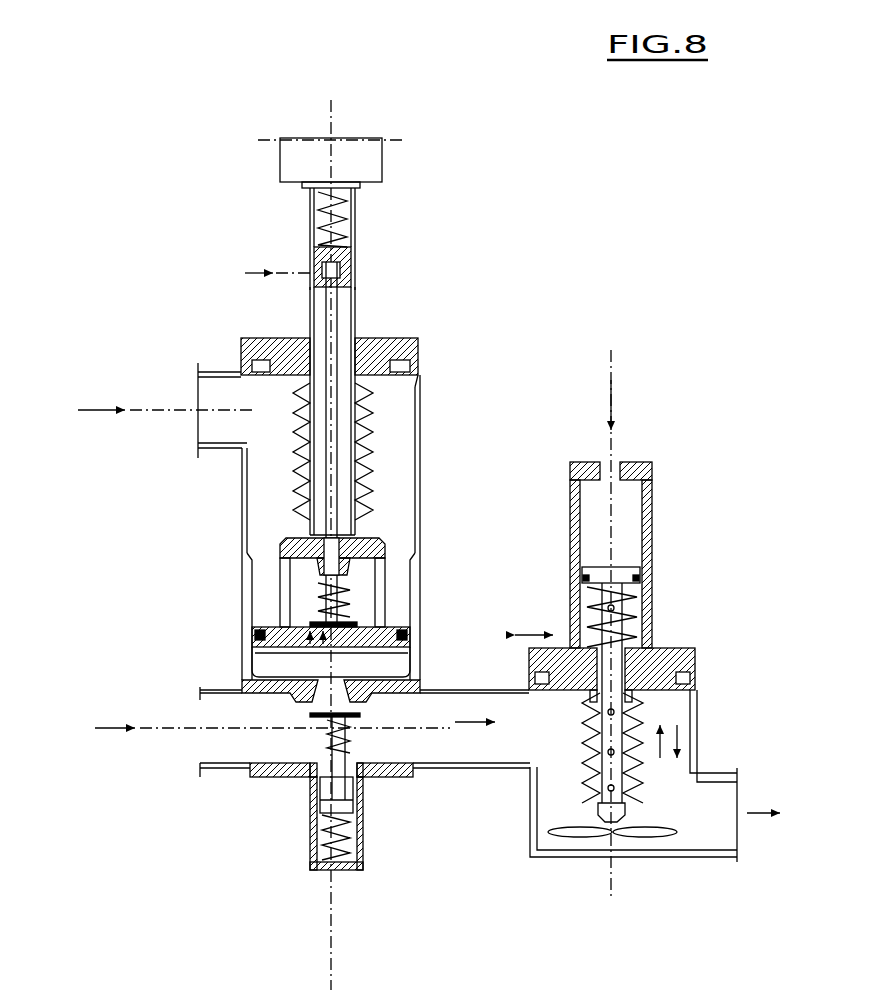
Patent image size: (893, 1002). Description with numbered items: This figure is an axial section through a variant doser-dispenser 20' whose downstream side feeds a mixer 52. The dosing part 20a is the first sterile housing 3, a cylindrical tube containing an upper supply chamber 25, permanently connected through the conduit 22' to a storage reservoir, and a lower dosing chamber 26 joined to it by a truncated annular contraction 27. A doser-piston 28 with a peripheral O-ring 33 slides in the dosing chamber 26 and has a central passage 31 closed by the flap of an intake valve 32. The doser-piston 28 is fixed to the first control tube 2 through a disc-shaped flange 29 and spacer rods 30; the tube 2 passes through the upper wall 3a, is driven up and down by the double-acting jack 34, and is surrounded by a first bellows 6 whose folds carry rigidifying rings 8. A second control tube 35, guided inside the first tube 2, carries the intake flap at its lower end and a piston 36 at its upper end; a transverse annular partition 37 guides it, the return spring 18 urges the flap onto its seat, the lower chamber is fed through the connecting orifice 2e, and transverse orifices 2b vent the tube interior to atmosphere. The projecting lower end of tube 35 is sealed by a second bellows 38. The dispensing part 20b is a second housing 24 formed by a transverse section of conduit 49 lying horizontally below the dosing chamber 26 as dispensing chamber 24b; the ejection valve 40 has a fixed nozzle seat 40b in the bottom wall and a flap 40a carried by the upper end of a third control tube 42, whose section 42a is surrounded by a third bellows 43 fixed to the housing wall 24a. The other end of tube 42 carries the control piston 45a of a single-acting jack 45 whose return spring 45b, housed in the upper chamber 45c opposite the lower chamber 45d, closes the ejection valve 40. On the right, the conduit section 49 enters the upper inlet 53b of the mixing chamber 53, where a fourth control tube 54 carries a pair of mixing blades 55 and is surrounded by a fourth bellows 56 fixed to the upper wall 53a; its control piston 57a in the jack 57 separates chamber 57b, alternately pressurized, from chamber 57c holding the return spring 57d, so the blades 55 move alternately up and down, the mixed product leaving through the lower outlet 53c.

The double-acting jack 34 is at (365, 160).
The return spring 18 is at (345, 207).
The piston 36 is at (353, 246).
The transverse annular partition 37 is at (355, 275).
The connecting orifice 2e is at (310, 266).
The first control tube 2 is at (356, 306).
The second control tube 35 is at (337, 455).
The upper wall 3a is at (383, 338).
The doser-dispenser 20' is at (483, 364).
The dosing part 20a is at (439, 374).
The conduit 22' is at (197, 386).
The first sterile housing 3 is at (421, 478).
The supply chamber 25 is at (388, 428).
The first bellows 6 is at (296, 421).
The rigidifying ring 8 is at (294, 464).
The flange 29 is at (298, 547).
The spacer rods 30 is at (284, 600).
The second bellows 38 is at (323, 597).
The O-ring 33 is at (257, 634).
The central passage 31 is at (346, 642).
The intake valve 32 is at (312, 636).
The dosing chamber 26 is at (262, 664).
The truncated annular contraction 27 is at (418, 557).
The doser-piston 28 is at (388, 630).
The second housing 24 is at (448, 690).
The transverse section of conduit 49 is at (216, 699).
The ejection valve 40 is at (258, 718).
The seat 40b is at (358, 699).
The flap 40a is at (361, 718).
The section of the third control tube 42a is at (323, 729).
The dispensing chamber 24b is at (272, 756).
The housing wall 24a is at (397, 771).
The third bellows 43 is at (320, 754).
The third control tube 42 is at (323, 791).
The single-acting jack 45 is at (346, 872).
The control piston 45a is at (361, 821).
The return spring 45b is at (351, 870).
The upper chamber 45c is at (327, 873).
The lower chamber 45d is at (308, 830).
The transverse orifice 2b is at (313, 838).
The dispensing part 20b is at (209, 937).
The jack 57 is at (628, 520).
The chamber 57b is at (595, 498).
The return spring 57d is at (580, 597).
The chamber 57c is at (588, 607).
The control piston 57a is at (622, 573).
The mixer 52 is at (614, 586).
The fourth control tube 54 is at (601, 637).
The upper wall 53a is at (696, 653).
The fourth bellows 56 is at (628, 730).
The mixing chamber 53 is at (611, 798).
The upper inlet 53b is at (514, 760).
The lower outlet 53c is at (703, 837).
The mixing blades 55 is at (577, 836).